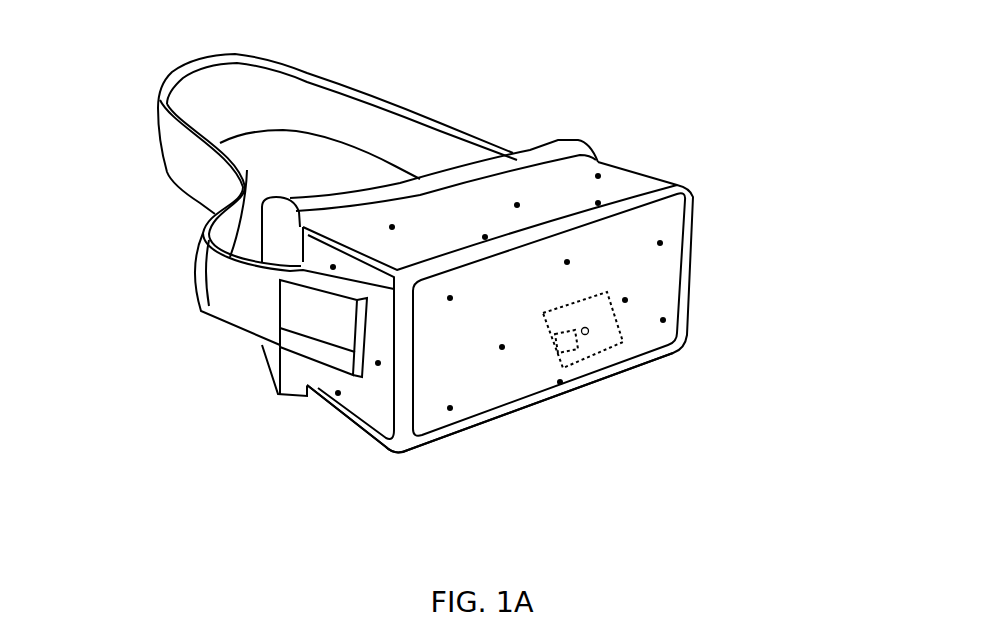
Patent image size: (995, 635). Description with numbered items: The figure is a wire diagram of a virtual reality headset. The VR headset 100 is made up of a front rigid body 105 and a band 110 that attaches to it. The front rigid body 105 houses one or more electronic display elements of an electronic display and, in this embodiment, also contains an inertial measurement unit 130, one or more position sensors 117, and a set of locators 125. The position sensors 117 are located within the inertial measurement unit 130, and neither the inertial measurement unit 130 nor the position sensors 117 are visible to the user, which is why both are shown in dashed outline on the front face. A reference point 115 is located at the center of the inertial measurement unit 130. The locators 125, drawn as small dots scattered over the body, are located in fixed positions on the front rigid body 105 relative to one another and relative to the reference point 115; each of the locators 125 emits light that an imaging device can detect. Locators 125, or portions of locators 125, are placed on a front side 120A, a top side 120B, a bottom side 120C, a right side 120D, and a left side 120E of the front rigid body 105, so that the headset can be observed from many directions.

The VR headset 100 is at (85, 55).
The front rigid body 105 is at (479, 314).
The band 110 is at (430, 115).
The reference point 115 is at (589, 345).
The position sensors 117 is at (565, 357).
The front side 120A is at (437, 434).
The top side 120B is at (362, 226).
The bottom side 120C is at (333, 435).
The right side 120D is at (368, 402).
The left side 120E is at (667, 168).
The locators 125 is at (675, 312).
The inertial measurement unit 130 is at (640, 348).